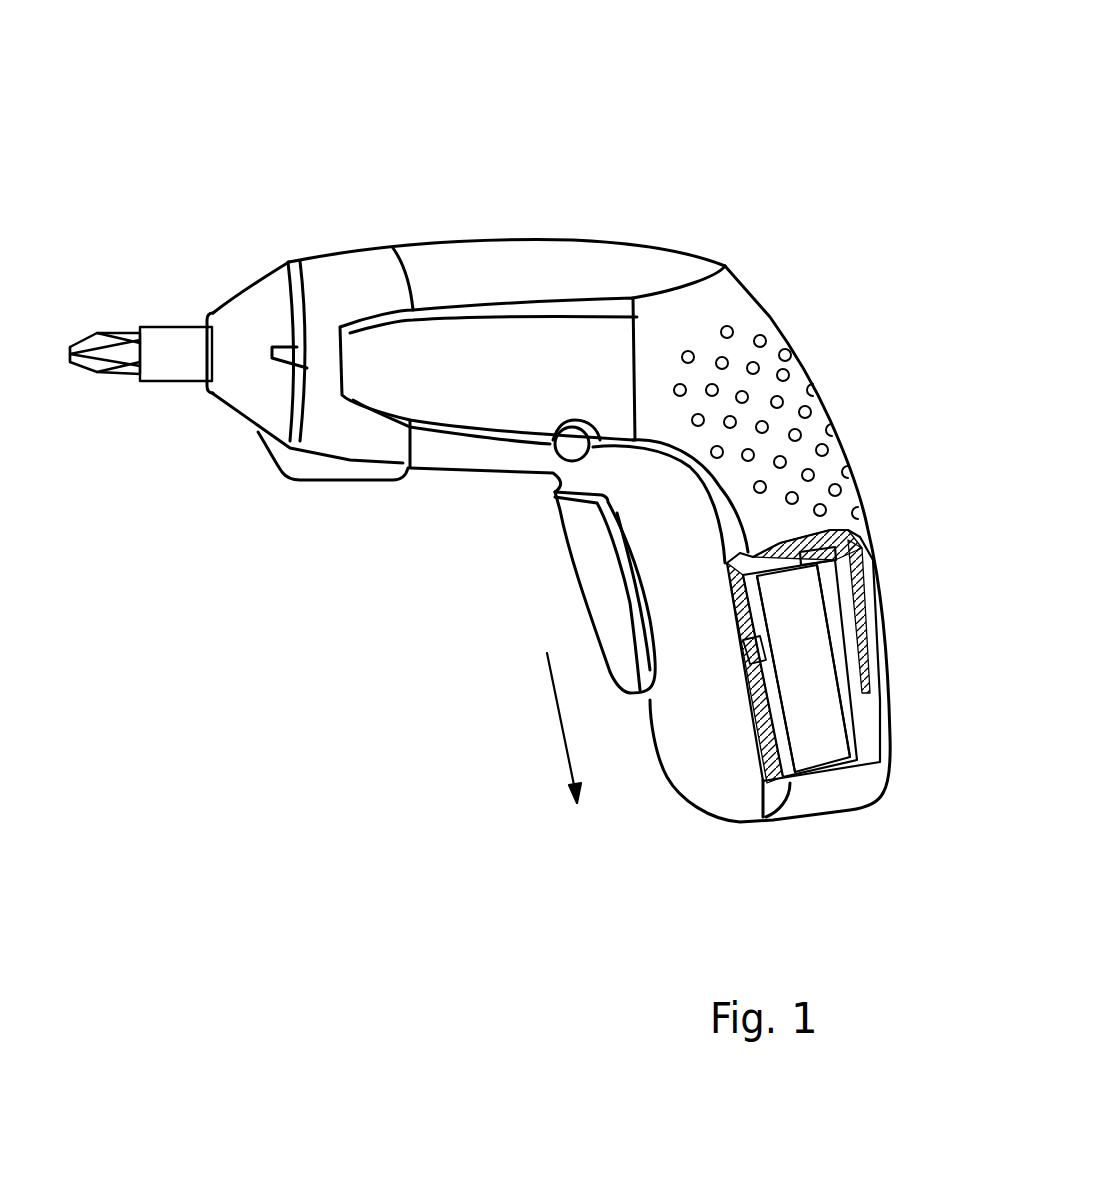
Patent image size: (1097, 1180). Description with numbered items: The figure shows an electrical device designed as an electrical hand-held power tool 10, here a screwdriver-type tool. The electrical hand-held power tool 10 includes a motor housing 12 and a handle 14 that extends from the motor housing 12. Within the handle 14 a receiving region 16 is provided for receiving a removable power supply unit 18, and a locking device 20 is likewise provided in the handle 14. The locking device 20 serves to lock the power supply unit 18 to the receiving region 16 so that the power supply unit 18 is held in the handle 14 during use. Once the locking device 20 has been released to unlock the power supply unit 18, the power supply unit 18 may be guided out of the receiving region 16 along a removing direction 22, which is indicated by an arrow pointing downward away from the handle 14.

The electrical hand-held power tool 10 is at (797, 198).
The motor housing 12 is at (507, 268).
The handle 14 is at (750, 347).
The receiving region 16 is at (770, 563).
The power supply unit 18 is at (803, 697).
The locking device 20 is at (763, 657).
The removing direction 22 is at (560, 732).